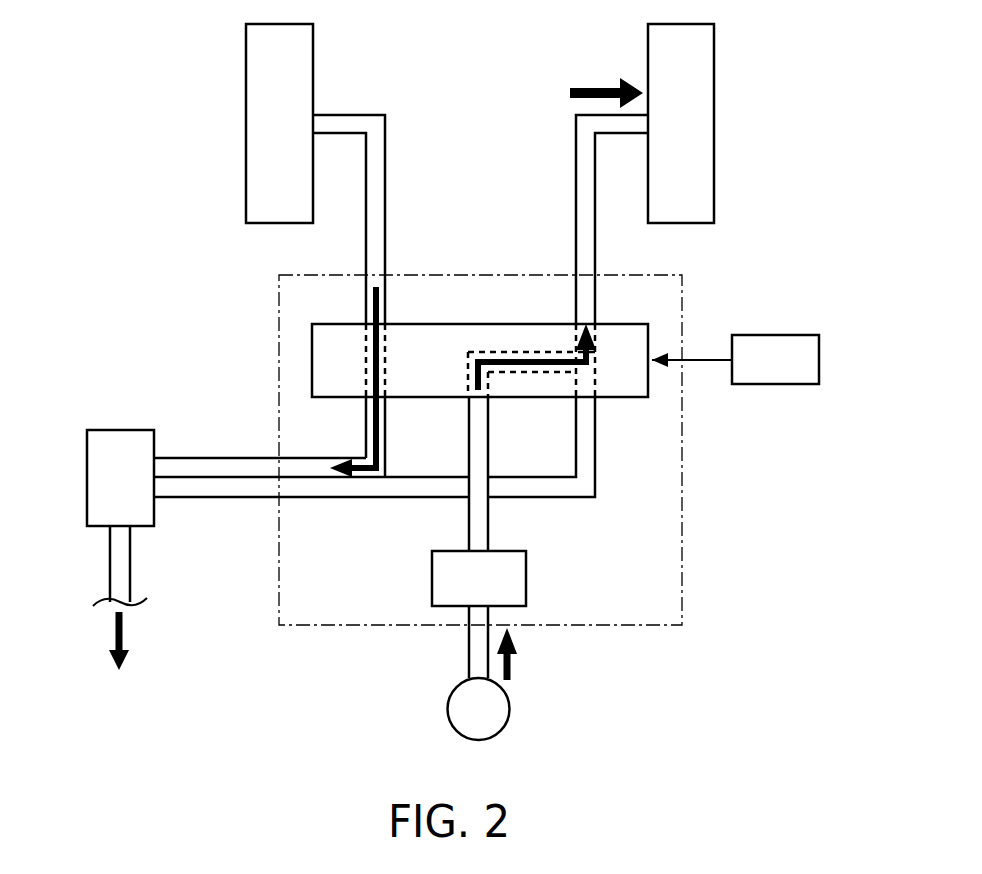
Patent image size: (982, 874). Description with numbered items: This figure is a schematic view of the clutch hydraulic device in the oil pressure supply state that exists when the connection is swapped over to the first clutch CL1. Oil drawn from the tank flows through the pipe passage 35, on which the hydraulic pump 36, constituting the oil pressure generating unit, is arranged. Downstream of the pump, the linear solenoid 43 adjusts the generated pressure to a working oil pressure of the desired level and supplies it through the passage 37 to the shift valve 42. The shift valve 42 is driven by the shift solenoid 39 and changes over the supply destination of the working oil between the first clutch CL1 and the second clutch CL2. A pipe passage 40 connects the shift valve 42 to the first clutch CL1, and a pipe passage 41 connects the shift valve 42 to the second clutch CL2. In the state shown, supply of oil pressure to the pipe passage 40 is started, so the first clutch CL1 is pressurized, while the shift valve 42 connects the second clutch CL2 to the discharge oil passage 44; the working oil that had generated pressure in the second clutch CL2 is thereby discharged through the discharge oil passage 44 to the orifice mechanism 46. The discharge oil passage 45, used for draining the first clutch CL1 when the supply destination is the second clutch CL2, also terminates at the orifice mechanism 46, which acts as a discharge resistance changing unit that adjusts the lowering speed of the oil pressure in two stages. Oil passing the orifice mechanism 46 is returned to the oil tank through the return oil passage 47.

The first clutch CL1 is at (698, 76).
The second clutch CL2 is at (258, 78).
The pipe passage 35 is at (477, 654).
The hydraulic pump 36 is at (463, 710).
The supply oil passage 37 is at (482, 527).
The shift solenoid 39 is at (812, 360).
The pipe passage 40 is at (574, 183).
The pipe passage 41 is at (387, 188).
The shift valve 42 is at (610, 397).
The linear solenoid 43 is at (513, 578).
The discharge oil passage 44 is at (213, 466).
The discharge oil passage 45 is at (213, 490).
The orifice mechanism 46 is at (87, 478).
The return oil passage 47 is at (120, 556).